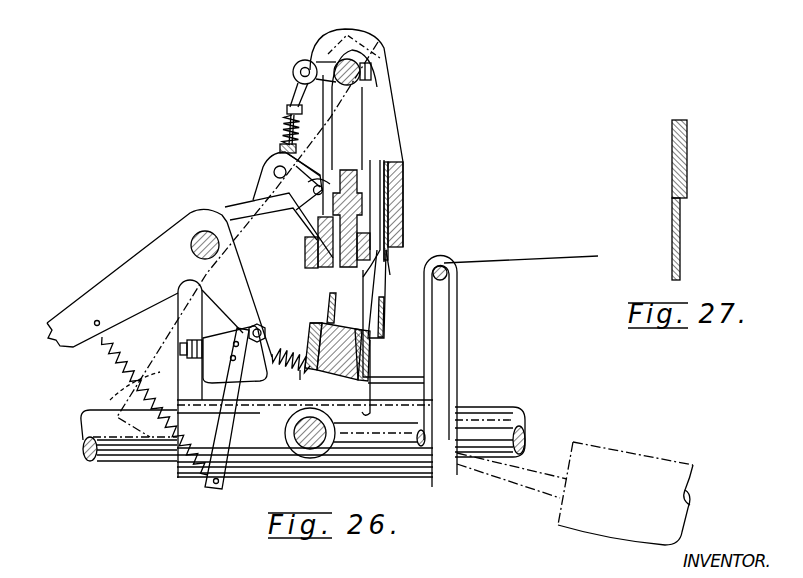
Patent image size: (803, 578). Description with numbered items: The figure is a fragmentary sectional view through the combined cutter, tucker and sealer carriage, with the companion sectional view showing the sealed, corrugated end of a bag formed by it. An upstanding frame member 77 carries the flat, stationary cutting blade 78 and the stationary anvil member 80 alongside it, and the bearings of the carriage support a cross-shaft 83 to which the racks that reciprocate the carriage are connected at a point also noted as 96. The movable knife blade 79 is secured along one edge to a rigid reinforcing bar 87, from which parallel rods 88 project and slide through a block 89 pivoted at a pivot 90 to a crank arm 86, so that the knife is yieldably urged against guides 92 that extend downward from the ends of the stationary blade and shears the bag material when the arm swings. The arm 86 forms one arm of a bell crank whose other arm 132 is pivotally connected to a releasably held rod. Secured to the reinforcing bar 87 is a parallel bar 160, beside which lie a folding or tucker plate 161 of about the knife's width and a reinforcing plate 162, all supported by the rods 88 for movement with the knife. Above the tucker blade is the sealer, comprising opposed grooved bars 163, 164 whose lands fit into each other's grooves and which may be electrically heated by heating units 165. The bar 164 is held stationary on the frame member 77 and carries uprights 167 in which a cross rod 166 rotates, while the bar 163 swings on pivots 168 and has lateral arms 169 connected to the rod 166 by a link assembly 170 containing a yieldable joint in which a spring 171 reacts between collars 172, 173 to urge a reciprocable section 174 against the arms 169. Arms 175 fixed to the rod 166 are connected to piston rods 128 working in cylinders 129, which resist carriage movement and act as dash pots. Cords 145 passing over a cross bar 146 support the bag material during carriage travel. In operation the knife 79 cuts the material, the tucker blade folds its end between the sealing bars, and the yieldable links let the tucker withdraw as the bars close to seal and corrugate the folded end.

The frame member 77 is at (234, 204).
The cutting blade 78 is at (393, 272).
The knife blade 79 is at (385, 316).
The anvil member 80 is at (389, 238).
The cross-shaft 83 is at (302, 449).
The arm 86 is at (247, 296).
The reinforcing bar 87 is at (372, 355).
The rod 88 is at (296, 375).
The block 89 is at (250, 362).
The pivot 90 is at (265, 330).
The guide 92 is at (391, 274).
The shaft 96 is at (313, 458).
The piston rod 128 is at (516, 478).
The cylinder 129 is at (622, 452).
The arm 132 is at (121, 274).
The cord 145 is at (538, 262).
The cross bar 146 is at (448, 273).
The bar 160 is at (362, 367).
The folding plate 161 is at (335, 313).
The reinforcing plate 162 is at (322, 322).
The sealing bar 163 is at (317, 232).
The sealing bar 164 is at (407, 190).
The heating unit 165 is at (306, 256).
The cross rod 166 is at (352, 63).
The upright 167 is at (352, 115).
The pivot 168 is at (323, 186).
The arm 169 is at (328, 140).
The link assembly 170 is at (289, 92).
The spring 171 is at (287, 122).
The collar 172 is at (301, 113).
The collar 173 is at (280, 147).
The reciprocable section 174 is at (283, 133).
The arm 175 is at (153, 350).